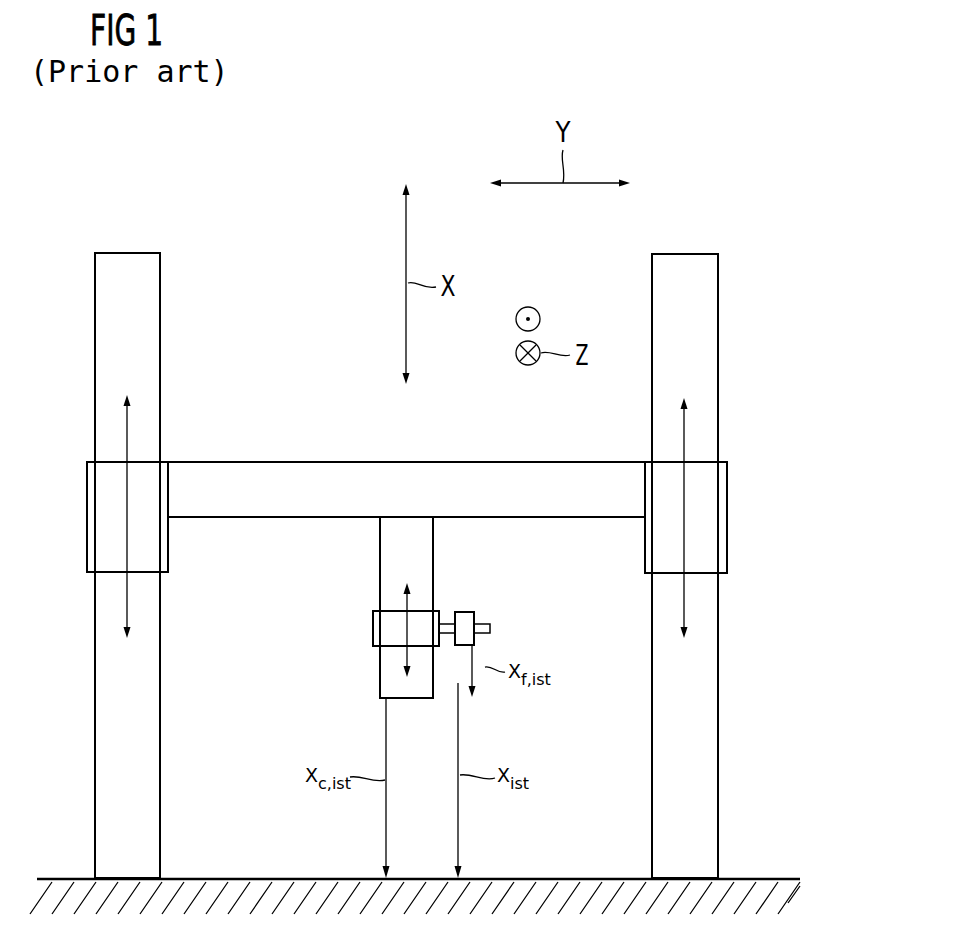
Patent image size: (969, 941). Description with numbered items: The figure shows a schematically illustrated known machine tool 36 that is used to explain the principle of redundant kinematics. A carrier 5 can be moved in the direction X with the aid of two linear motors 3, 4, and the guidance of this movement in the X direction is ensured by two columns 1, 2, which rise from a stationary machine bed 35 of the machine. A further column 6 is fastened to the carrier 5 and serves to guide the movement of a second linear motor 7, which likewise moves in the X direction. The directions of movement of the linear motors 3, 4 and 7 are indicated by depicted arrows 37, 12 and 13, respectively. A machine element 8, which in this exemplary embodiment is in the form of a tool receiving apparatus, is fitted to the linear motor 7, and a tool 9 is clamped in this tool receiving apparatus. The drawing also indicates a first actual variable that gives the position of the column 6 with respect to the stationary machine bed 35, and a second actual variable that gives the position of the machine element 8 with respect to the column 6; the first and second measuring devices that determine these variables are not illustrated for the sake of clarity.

The column 1 is at (160, 320).
The column 2 is at (652, 320).
The linear motor 3 is at (87, 515).
The linear motor 4 is at (727, 517).
The carrier 5 is at (328, 470).
The column 6 is at (433, 565).
The linear motor 7 is at (373, 628).
The machine element 8 is at (476, 615).
The tool 9 is at (492, 629).
The arrow 12 is at (684, 430).
The arrow 13 is at (405, 600).
The machine bed 35 is at (262, 878).
The machine tool 36 is at (634, 104).
The arrow 37 is at (127, 430).